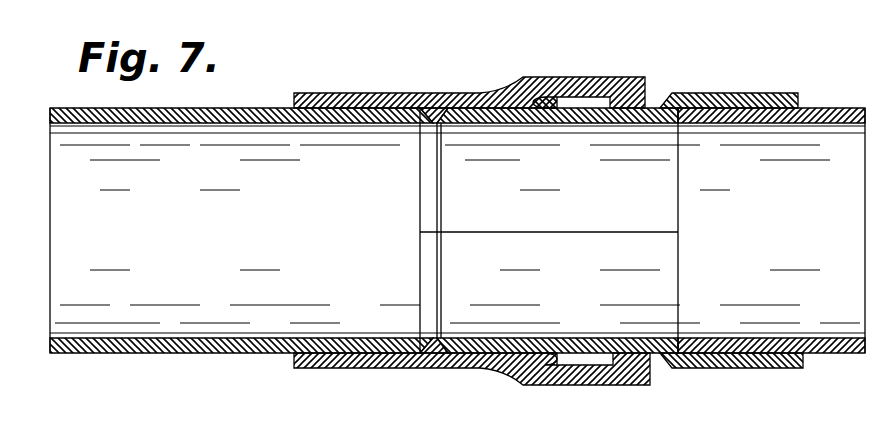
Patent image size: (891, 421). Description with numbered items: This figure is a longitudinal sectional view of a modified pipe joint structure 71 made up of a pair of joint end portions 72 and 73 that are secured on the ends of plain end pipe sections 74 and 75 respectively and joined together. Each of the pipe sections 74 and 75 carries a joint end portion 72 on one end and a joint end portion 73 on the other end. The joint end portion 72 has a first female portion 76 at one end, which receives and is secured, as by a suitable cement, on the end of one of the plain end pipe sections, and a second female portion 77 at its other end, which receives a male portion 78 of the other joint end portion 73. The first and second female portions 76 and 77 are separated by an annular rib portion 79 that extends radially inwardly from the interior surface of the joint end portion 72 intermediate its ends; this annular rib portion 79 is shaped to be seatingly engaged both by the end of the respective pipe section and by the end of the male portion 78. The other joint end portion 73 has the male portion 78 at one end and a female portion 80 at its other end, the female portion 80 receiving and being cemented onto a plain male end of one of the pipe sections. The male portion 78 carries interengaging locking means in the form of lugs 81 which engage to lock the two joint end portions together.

The modified pipe joint structure 71 is at (372, 82).
The joint end portion 72 is at (406, 94).
The joint end portion 73 is at (737, 93).
The plain end pipe section 74 is at (197, 108).
The plain end pipe section 75 is at (825, 108).
The first female portion 76 is at (318, 370).
The second female portion 77 is at (650, 378).
The male portion 78 is at (620, 338).
The annular rib portion 79 is at (430, 252).
The female portion 80 is at (798, 369).
The lugs 81 is at (538, 100).